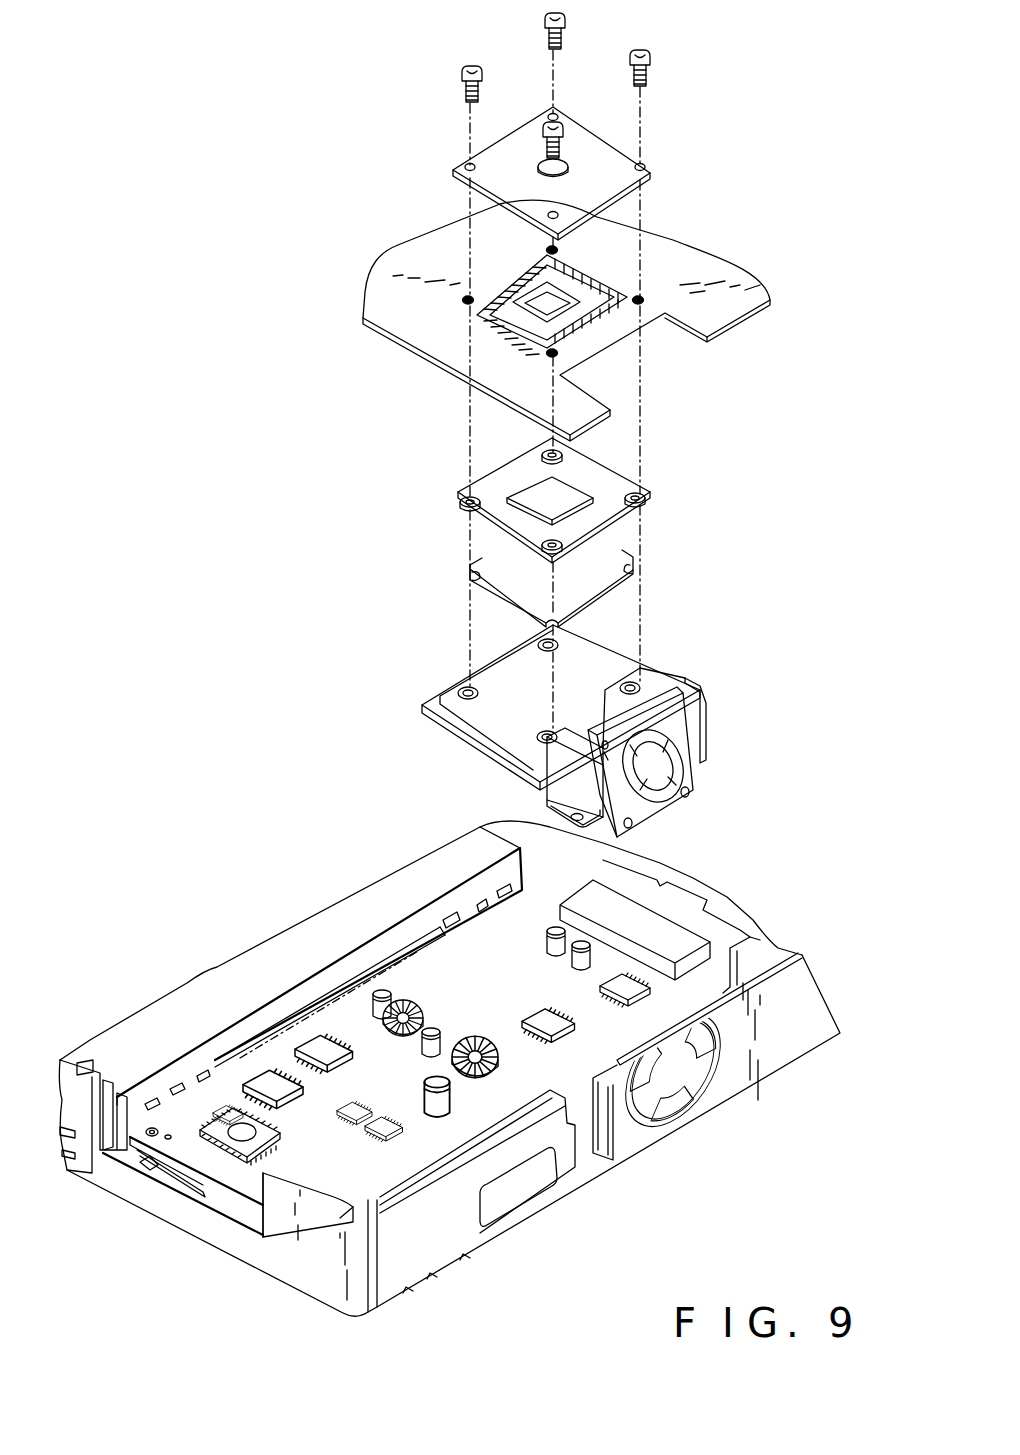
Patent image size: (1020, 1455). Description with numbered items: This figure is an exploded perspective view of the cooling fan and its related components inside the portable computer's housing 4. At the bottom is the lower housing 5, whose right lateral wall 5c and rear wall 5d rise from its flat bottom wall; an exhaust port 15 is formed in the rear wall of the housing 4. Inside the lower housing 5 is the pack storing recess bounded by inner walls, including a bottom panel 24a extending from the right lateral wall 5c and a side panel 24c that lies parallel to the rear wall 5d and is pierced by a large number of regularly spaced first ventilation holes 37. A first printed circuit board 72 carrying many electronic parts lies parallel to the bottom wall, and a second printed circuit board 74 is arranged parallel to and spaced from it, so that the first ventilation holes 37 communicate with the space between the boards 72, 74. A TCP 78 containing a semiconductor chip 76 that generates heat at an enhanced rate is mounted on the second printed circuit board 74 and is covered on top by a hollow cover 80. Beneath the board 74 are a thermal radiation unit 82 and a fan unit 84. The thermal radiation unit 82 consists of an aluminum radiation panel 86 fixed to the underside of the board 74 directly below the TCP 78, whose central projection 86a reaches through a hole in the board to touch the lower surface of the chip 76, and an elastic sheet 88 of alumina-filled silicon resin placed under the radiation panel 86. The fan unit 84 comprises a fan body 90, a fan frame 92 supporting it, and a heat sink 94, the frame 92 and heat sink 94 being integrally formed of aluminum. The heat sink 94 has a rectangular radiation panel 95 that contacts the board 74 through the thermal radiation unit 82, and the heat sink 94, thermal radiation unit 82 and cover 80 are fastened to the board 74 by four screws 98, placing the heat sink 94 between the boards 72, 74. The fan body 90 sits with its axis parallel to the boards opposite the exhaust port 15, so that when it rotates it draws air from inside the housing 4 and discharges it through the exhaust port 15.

The housing 4 is at (449, 1072).
The lower housing 5 is at (597, 1190).
The right lateral wall 5c is at (273, 1255).
The rear wall 5d is at (480, 1233).
The exhaust port 15 is at (680, 1110).
The bottom panel 24a is at (285, 960).
The side panel 24c is at (413, 930).
The first ventilation holes 37 is at (177, 1078).
The first printed circuit board 72 is at (227, 1168).
The second printed circuit board 74 is at (405, 322).
The semiconductor chip 76 is at (557, 301).
The TCP (tape carrier package) 78 is at (587, 295).
The hollow cover 80 is at (530, 138).
The thermal radiation unit 82 is at (574, 519).
The fan unit 84 is at (573, 725).
The radiation panel 86 is at (497, 477).
The projection 86a is at (532, 495).
The elastic sheet 88 is at (497, 557).
The fan body 90 is at (673, 803).
The fan frame 92 is at (707, 720).
The heat sink 94 is at (487, 678).
The radiation panel 95 is at (510, 720).
The screws 98 is at (545, 30).